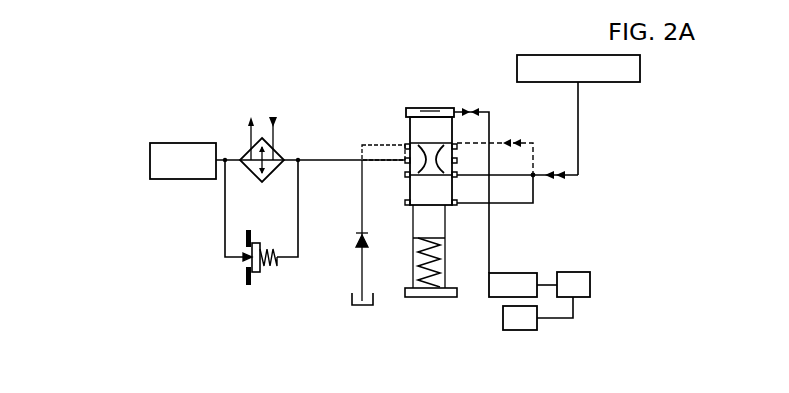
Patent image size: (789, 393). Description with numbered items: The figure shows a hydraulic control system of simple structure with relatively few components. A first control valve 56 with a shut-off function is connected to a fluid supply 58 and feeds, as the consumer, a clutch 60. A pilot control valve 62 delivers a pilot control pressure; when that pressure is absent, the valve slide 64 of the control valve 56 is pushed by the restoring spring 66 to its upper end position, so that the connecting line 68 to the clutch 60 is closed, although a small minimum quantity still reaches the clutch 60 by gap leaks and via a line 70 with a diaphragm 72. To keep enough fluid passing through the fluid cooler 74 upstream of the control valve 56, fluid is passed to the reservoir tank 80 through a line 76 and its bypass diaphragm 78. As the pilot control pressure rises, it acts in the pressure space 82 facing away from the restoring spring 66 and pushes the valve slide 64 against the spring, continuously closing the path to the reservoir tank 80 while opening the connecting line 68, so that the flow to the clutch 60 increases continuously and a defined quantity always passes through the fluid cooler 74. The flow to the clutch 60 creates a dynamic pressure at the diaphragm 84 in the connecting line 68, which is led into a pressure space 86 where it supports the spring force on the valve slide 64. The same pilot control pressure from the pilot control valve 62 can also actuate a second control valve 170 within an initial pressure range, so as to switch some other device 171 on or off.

The first control valve 56 is at (346, 105).
The fluid supply 58 is at (162, 160).
The clutch 60 is at (548, 70).
The pilot control valve 62 is at (515, 280).
The valve slide 64 is at (380, 146).
The restoring spring 66 is at (450, 300).
The connecting line 68 is at (548, 177).
The line 70 is at (503, 137).
The diaphragm 72 is at (505, 140).
The fluid cooler 74 is at (248, 158).
The line 76 is at (425, 128).
The bypass diaphragm 78 is at (362, 237).
The reservoir tank 80 is at (357, 305).
The pressure space 82 is at (415, 110).
The diaphragm 84 is at (508, 177).
The pressure space 86 is at (452, 208).
The second control valve 170 is at (578, 287).
The other device 171 is at (525, 318).